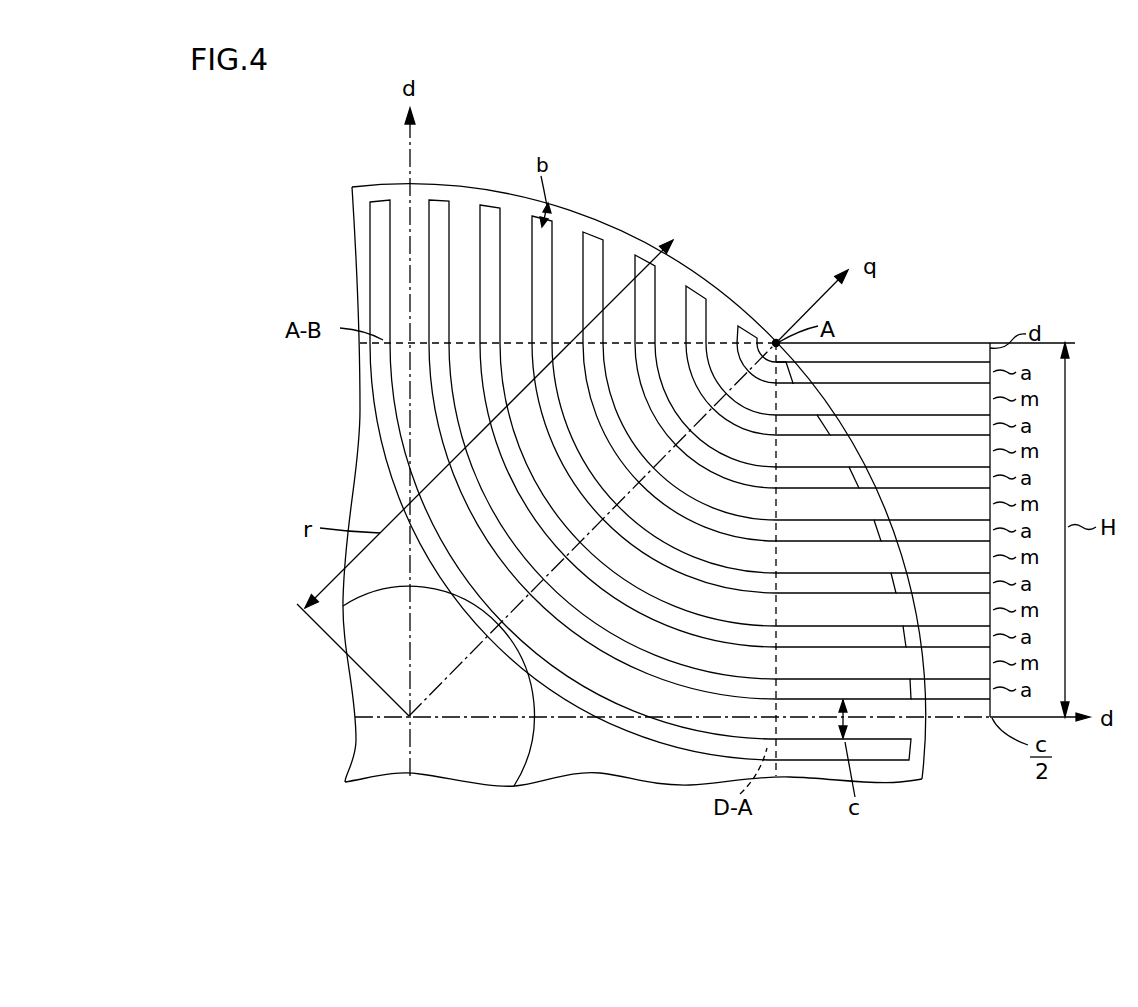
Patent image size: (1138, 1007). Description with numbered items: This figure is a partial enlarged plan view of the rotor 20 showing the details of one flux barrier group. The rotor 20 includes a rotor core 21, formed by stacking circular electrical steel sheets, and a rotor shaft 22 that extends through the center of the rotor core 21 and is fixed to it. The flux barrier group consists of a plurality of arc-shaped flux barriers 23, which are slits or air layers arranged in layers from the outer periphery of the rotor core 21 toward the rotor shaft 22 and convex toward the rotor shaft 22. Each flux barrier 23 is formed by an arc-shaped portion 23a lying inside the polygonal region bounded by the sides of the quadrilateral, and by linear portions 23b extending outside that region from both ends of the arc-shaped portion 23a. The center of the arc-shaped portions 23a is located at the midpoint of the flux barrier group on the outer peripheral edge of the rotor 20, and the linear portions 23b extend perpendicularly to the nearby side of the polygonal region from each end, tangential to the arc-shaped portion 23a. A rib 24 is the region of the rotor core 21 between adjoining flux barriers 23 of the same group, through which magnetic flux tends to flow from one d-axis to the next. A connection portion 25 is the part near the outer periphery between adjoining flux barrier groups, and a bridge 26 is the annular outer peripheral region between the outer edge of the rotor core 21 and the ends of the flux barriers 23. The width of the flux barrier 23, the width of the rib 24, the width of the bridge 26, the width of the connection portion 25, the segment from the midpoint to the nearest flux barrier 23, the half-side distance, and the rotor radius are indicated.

The rotor 20 is at (607, 832).
The rotor core 21 is at (538, 766).
The rotor shaft 22 is at (472, 762).
The flux barrier 23 is at (383, 207).
The arc-shaped portion 23a is at (677, 558).
The linear portion 23b is at (537, 318).
The rib 24 is at (463, 213).
The connection portion 25 is at (886, 730).
The bridge 26 is at (513, 200).